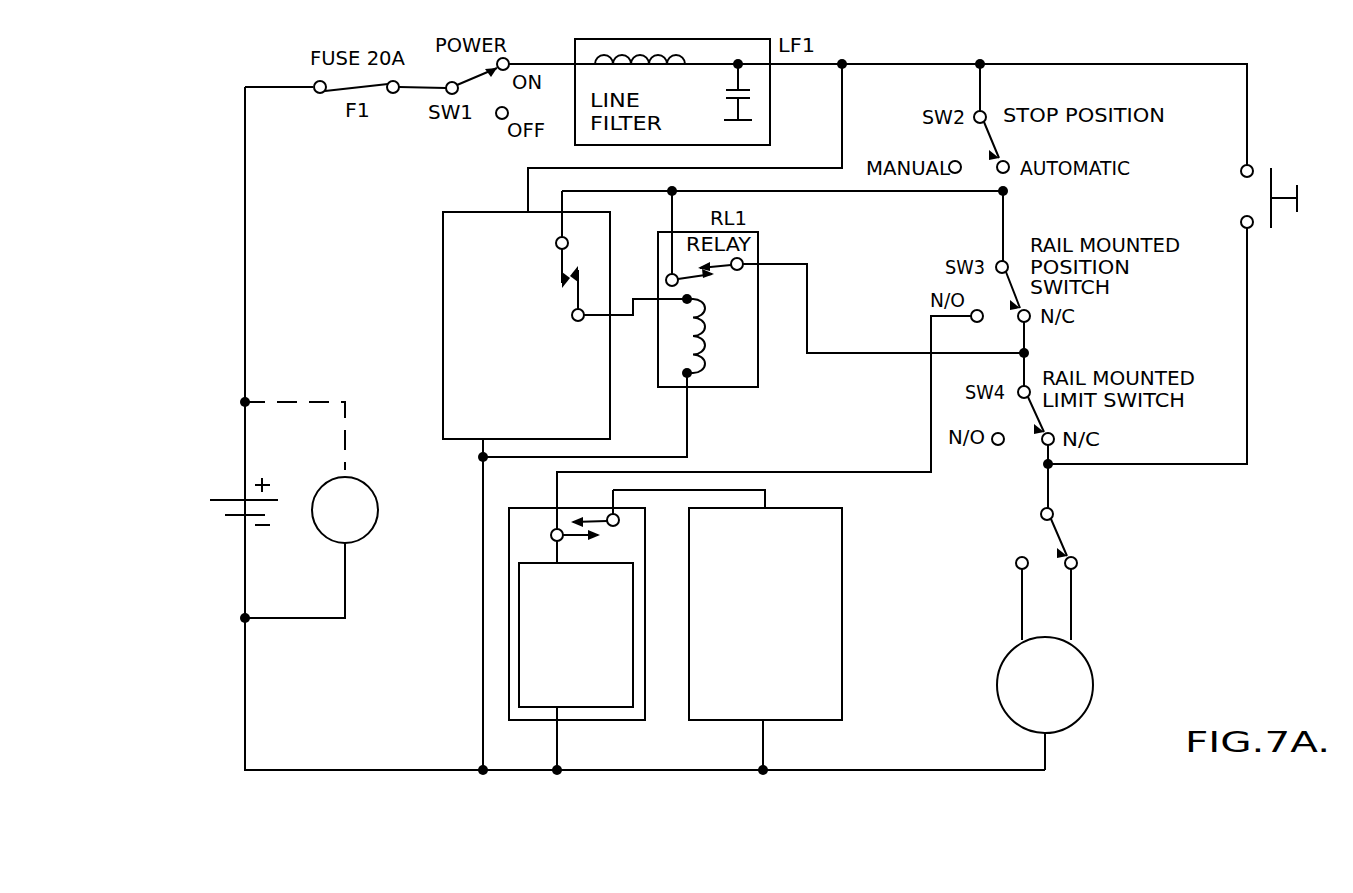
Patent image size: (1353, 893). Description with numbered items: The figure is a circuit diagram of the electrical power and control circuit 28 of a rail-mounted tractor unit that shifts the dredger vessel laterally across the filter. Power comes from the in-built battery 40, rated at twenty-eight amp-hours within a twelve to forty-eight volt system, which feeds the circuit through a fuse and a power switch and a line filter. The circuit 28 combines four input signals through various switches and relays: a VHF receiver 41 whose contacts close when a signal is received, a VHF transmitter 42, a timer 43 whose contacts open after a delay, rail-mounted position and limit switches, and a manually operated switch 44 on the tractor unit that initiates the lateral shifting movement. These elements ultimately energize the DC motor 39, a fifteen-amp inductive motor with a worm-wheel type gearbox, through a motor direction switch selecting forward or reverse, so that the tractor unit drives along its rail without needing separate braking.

The VHF receiver 41 is at (457, 230).
The battery 40 is at (233, 557).
The manually operated switch 44 is at (1283, 245).
The timer 43 is at (608, 693).
The VHF transmitter 42 is at (785, 705).
The circuit 28 is at (1213, 615).
The DC motor 39 is at (1063, 718).